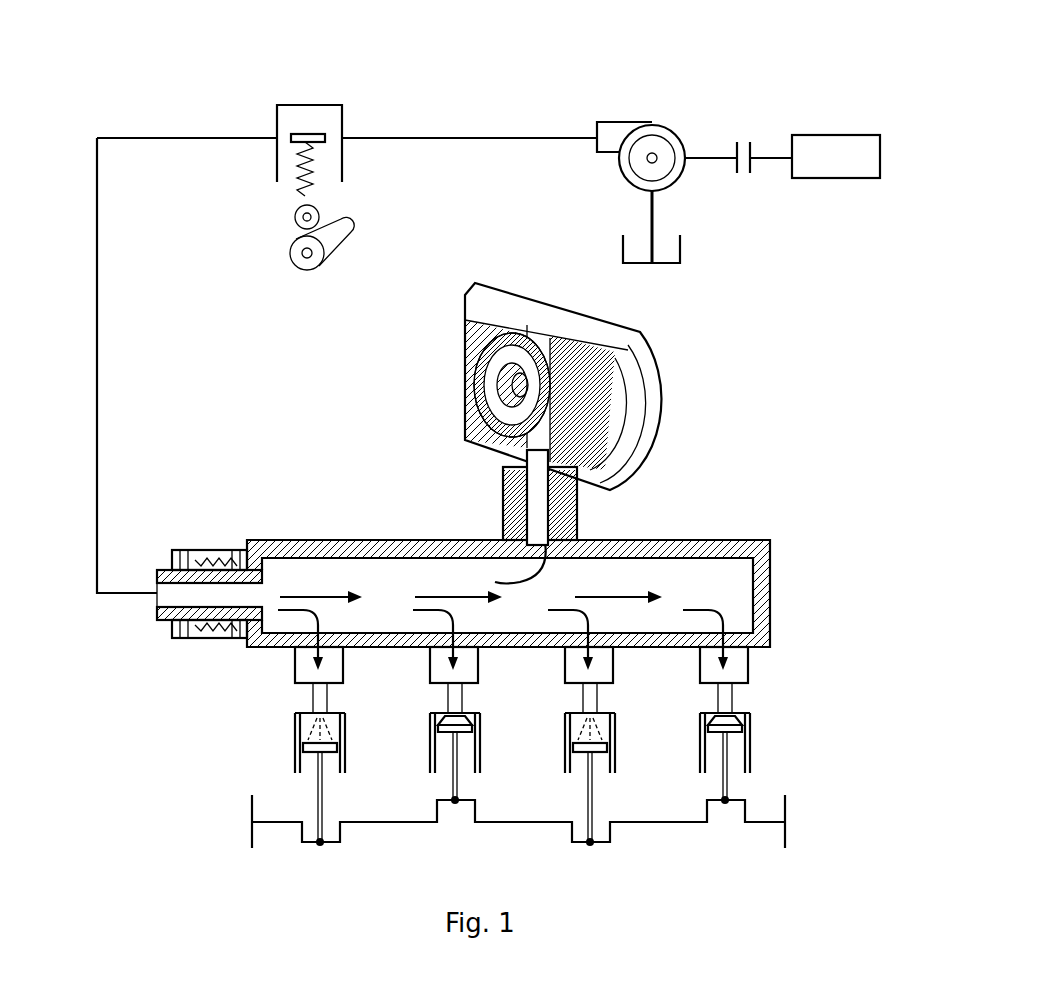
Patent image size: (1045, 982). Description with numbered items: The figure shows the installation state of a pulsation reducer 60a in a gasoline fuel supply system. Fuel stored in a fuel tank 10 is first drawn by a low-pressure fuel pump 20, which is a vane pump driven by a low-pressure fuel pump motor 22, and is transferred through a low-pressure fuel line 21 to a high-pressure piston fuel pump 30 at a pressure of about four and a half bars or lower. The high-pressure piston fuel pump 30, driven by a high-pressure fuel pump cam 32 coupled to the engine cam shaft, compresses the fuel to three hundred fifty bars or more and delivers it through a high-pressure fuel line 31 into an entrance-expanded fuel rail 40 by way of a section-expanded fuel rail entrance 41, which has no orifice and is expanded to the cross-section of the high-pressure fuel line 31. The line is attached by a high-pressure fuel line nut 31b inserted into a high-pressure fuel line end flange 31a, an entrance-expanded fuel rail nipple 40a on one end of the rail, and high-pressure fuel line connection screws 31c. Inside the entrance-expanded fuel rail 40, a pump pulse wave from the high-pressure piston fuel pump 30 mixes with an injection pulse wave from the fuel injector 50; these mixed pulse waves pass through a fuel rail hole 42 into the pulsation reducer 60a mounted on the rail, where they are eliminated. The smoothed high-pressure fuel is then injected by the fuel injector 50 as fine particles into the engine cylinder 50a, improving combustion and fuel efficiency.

The fuel tank 10 is at (680, 252).
The low-pressure fuel pump 20 is at (666, 114).
The low-pressure fuel line 21 is at (455, 137).
The low-pressure fuel pump motor 22 is at (852, 135).
The high-pressure piston fuel pump 30 is at (334, 98).
The high-pressure fuel line 31 is at (97, 362).
The high-pressure fuel line end flange 31a is at (172, 632).
The high-pressure fuel line nut 31b is at (168, 540).
The high-pressure fuel line connection screws 31c is at (222, 565).
The high-pressure fuel pump cam 32 is at (330, 247).
The entrance-expanded fuel rail 40 is at (733, 540).
The entrance-expanded fuel rail nipple 40a is at (230, 590).
The section-expanded fuel rail entrance 41 is at (250, 593).
The fuel rail hole 42 is at (594, 540).
The fuel injector 50 is at (285, 684).
The engine cylinder 50a is at (770, 735).
The pulsation reducer 60a is at (652, 397).